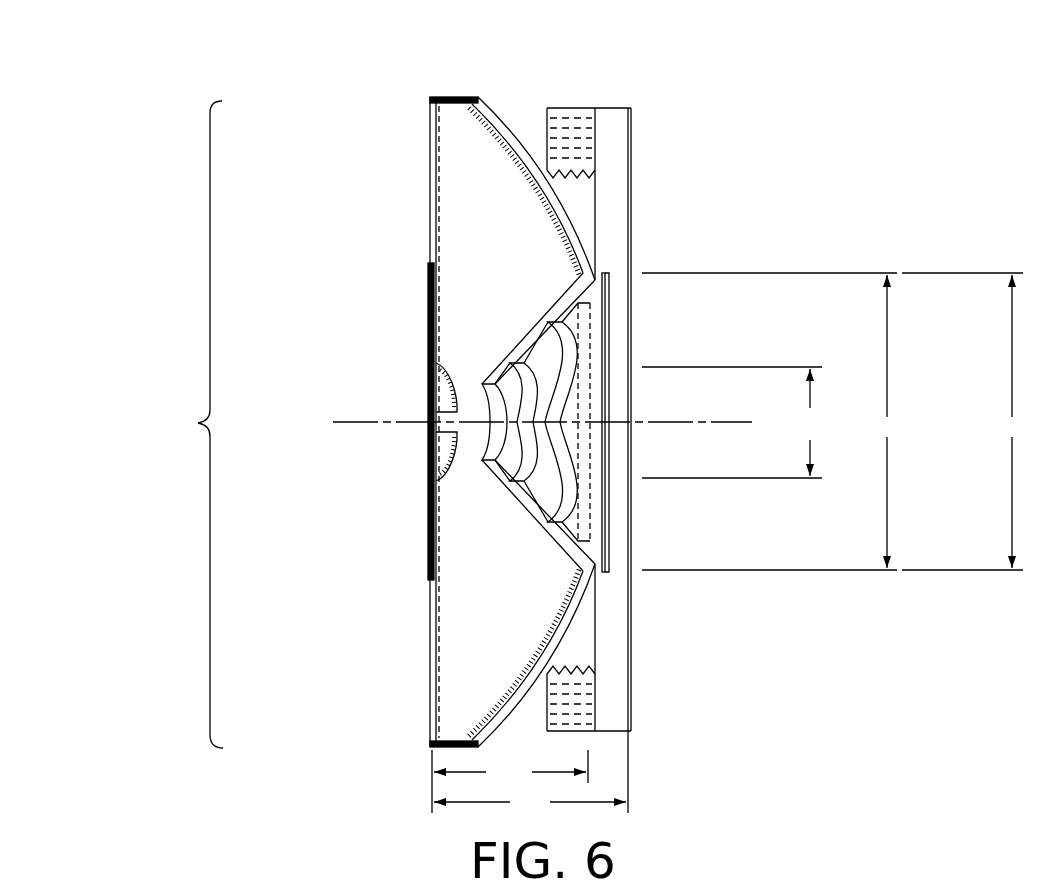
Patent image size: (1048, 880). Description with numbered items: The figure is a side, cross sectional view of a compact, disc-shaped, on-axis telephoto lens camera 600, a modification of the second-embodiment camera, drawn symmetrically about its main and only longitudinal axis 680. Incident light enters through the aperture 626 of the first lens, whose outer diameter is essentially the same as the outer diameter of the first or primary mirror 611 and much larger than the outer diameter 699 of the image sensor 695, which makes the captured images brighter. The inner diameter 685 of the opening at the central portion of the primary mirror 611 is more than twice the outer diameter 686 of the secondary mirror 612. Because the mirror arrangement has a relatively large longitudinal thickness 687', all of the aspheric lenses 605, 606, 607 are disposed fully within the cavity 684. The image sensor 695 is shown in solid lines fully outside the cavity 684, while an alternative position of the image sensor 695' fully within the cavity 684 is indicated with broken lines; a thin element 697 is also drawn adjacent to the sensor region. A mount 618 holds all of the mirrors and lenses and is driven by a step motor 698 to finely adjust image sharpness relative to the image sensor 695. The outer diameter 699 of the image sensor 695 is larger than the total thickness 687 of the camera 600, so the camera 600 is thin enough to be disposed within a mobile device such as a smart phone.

The camera 600 is at (765, 108).
The primary mirror 611 is at (508, 160).
The secondary mirror 612 is at (445, 390).
The mount 618 is at (583, 222).
The aperture 626 is at (187, 424).
The longitudinal axis 680 is at (332, 425).
The cavity 684 is at (543, 492).
The aspheric lens 605 is at (505, 430).
The aspheric lens 606 is at (537, 462).
The aspheric lens 607 is at (562, 512).
The inner diameter of the opening of the primary mirror 685 is at (774, 421).
The outer diameter of the secondary mirror 686 is at (735, 422).
The total thickness 687 is at (531, 772).
The longitudinal thickness of the mirror arrangement 687' is at (510, 781).
The image sensor 695 is at (671, 422).
The image sensor in alternative position 695' is at (657, 422).
The thin plate 697 is at (612, 270).
The step motor 698 is at (580, 147).
The outer diameter of the image sensor 699 is at (966, 421).